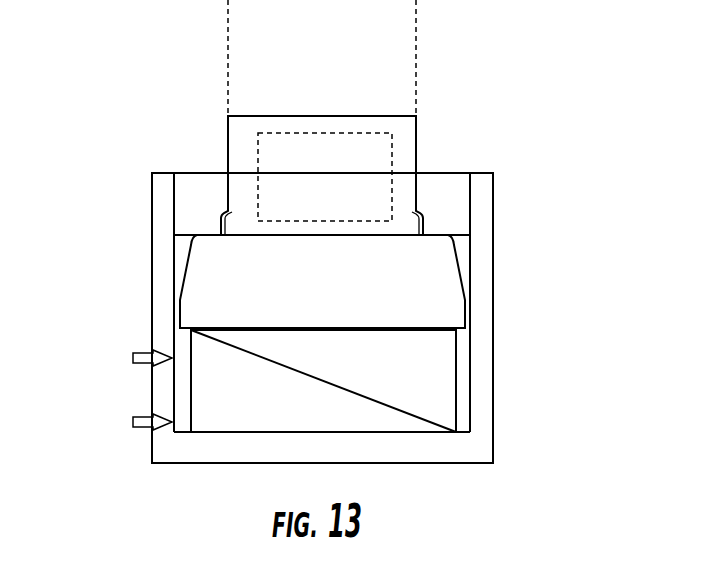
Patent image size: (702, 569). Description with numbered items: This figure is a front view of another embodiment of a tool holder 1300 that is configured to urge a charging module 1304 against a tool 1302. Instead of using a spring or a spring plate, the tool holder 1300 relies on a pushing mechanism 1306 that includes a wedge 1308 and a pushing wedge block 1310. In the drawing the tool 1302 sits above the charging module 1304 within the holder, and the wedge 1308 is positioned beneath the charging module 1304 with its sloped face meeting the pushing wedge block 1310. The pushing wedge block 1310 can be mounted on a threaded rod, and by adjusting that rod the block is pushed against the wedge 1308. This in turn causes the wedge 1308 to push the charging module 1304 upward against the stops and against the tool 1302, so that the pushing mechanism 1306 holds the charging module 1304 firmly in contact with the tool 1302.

The tool holder 1300 is at (133, 488).
The tool 1302 is at (187, 86).
The charging module 1304 is at (188, 303).
The pushing mechanism 1306 is at (470, 402).
The wedge 1308 is at (460, 353).
The pushing wedge block 1310 is at (202, 180).